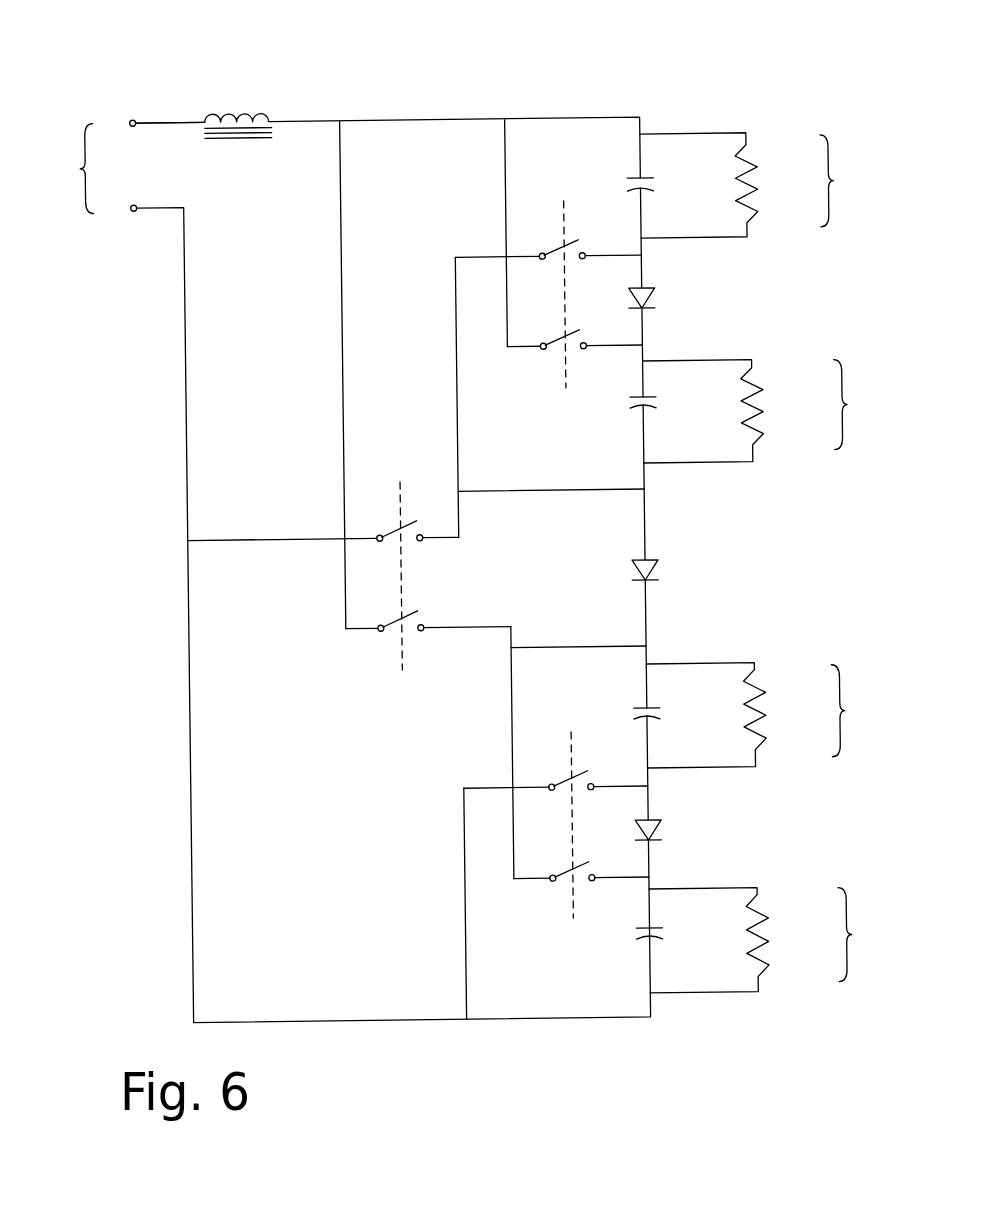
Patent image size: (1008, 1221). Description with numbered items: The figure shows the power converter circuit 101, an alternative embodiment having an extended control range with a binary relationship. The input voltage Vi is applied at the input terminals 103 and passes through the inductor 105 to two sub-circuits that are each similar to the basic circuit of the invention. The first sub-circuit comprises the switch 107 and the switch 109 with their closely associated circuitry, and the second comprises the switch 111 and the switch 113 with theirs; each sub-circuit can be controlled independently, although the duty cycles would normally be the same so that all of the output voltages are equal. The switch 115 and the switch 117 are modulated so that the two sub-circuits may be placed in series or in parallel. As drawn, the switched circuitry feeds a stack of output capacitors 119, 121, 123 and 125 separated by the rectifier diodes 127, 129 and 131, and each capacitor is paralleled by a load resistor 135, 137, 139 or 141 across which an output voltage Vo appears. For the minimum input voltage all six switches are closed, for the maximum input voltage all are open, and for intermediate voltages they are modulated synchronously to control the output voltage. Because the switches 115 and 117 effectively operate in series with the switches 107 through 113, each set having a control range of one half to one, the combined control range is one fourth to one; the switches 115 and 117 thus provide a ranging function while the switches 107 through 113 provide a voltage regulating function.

The power converter circuit 101 is at (249, 20).
The input voltage source terminals 103 is at (117, 200).
The inductor L1 105 is at (280, 106).
The switch S1 107 is at (526, 232).
The switch S2 109 is at (525, 368).
The switch S3 111 is at (560, 744).
The switch S4 113 is at (553, 910).
The switch S5 115 is at (383, 478).
The switch S6 117 is at (381, 650).
The output capacitor C1 119 is at (662, 166).
The output capacitor C2 121 is at (660, 388).
The output capacitor C3 123 is at (668, 690).
The output capacitor C4 125 is at (668, 911).
The rectifier diode Cr1 127 is at (653, 281).
The rectifier diode Cr2 129 is at (657, 543).
The rectifier diode Cr3 131 is at (665, 811).
The load resistor R1 135 is at (767, 172).
The load resistor R2 137 is at (769, 386).
The load resistor R3 139 is at (763, 687).
The load resistor R4 141 is at (764, 914).